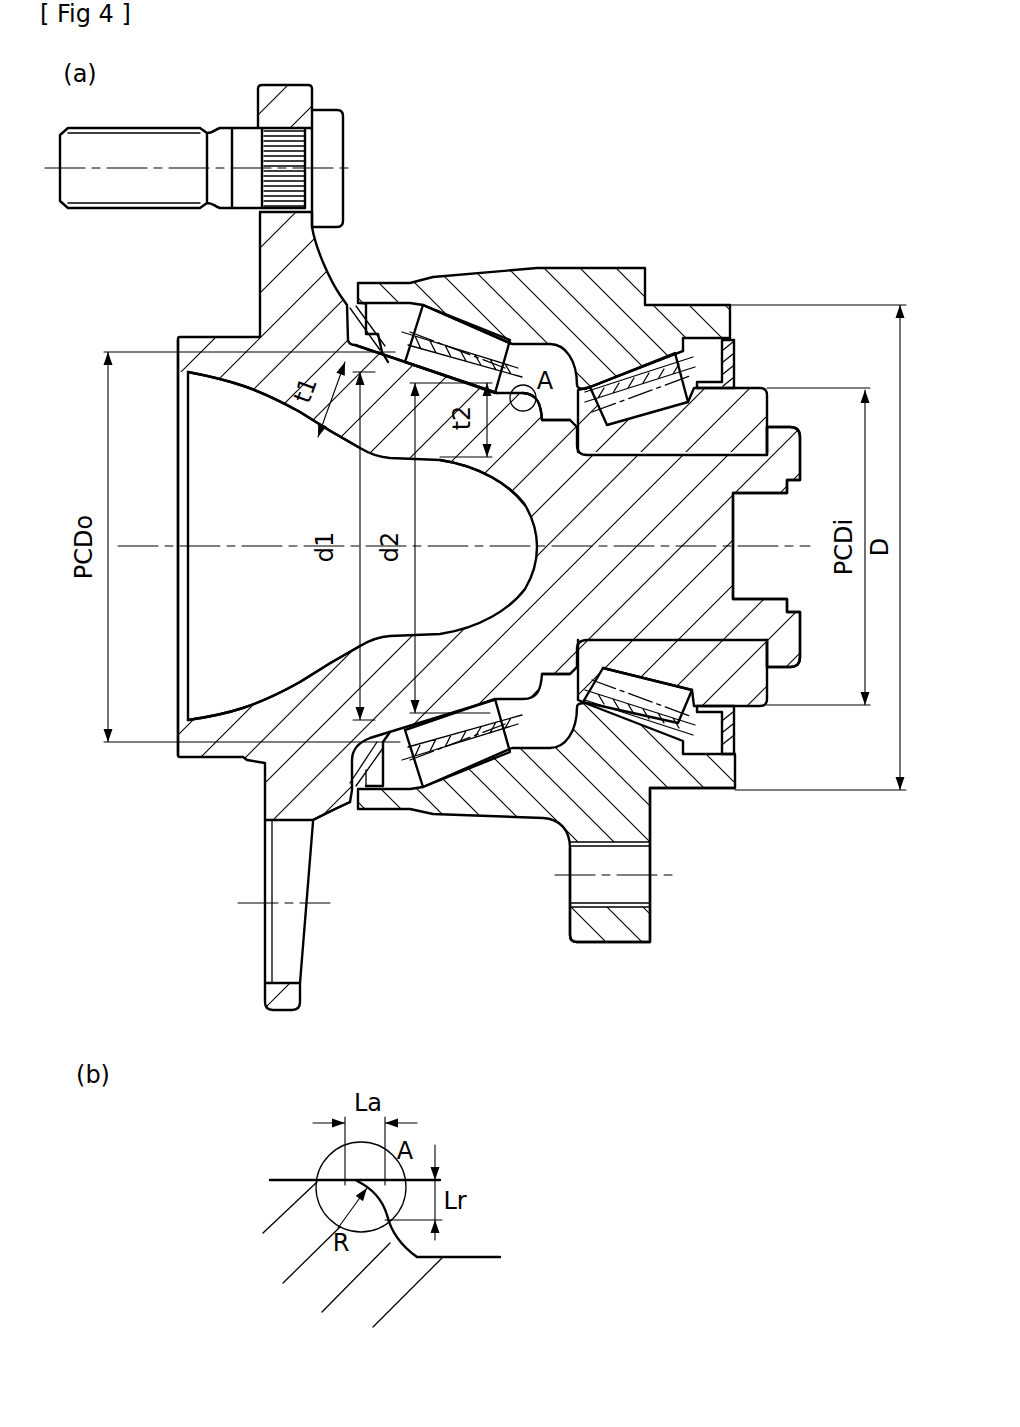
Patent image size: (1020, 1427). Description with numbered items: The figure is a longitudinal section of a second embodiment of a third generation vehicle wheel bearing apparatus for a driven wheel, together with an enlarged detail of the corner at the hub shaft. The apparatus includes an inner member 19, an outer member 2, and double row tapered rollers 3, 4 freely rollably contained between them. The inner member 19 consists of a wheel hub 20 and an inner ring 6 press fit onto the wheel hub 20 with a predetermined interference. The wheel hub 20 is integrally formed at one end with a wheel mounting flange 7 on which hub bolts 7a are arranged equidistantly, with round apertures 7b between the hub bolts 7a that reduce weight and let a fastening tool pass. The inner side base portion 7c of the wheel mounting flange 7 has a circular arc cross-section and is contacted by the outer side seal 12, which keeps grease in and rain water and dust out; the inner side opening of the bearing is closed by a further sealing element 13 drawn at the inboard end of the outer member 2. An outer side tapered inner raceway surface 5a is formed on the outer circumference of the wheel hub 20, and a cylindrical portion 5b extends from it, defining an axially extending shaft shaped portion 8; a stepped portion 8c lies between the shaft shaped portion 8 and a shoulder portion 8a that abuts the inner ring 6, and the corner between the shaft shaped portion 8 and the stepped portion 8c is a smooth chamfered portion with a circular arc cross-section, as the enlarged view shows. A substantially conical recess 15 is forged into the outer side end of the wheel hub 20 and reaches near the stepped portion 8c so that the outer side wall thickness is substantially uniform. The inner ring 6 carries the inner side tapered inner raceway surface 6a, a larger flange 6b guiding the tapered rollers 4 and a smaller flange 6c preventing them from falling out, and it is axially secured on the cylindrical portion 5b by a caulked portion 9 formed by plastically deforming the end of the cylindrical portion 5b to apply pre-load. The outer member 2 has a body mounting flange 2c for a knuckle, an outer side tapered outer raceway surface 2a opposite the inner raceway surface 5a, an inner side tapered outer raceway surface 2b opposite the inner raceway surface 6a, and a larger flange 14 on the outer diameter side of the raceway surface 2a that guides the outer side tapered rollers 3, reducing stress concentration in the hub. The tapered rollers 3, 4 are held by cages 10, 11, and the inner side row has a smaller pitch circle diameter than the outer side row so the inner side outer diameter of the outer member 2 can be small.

The outer member 2 is at (495, 298).
The outer side tapered outer raceway surface 2a is at (447, 300).
The inner side tapered outer raceway surface 2b is at (624, 345).
The body mounting flange 2c is at (612, 933).
The outer side tapered rollers 3 is at (492, 750).
The inner side tapered rollers 4 is at (674, 788).
The inner raceway surface 5a is at (414, 370).
The cylindrical portion 5b is at (662, 680).
The inner ring 6 is at (768, 425).
The inner raceway surface 6a is at (687, 437).
The larger flange 6b is at (670, 683).
The smaller flange 6c is at (557, 680).
The wheel mounting flange 7 is at (290, 108).
The hub bolts 7a is at (175, 155).
The round apertures 7b is at (287, 823).
The inner side base portion 7c is at (360, 800).
The shaft shaped portion 8 is at (515, 348).
The shoulder portion 8a is at (540, 478).
The stepped portion 8c is at (512, 470).
The caulked portion 9 is at (785, 457).
The cage 10 is at (430, 814).
The cage 11 is at (707, 788).
The seal 12 is at (383, 808).
The cap 13 is at (737, 740).
The larger flange 14 is at (393, 300).
The conical recess 15 is at (392, 633).
The inner member 19 is at (348, 458).
The wheel hub 20 is at (205, 400).